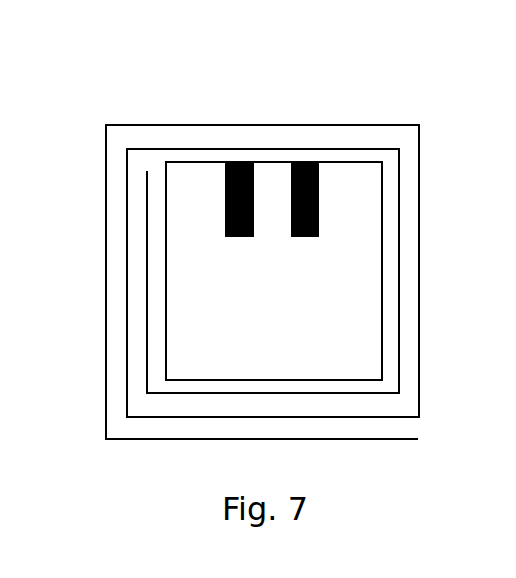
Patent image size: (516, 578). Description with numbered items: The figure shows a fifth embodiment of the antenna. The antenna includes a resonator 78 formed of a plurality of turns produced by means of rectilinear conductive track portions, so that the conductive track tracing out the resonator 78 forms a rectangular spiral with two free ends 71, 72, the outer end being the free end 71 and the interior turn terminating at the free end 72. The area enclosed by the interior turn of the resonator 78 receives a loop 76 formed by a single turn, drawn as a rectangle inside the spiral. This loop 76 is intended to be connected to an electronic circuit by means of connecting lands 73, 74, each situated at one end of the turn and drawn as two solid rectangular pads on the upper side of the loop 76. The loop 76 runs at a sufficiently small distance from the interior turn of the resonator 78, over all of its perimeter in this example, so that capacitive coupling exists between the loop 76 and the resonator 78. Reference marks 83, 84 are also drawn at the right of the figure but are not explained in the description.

The free end 71 is at (418, 439).
The free end 72 is at (147, 172).
The connecting land 73 is at (240, 237).
The connecting land 74 is at (305, 237).
The loop 76 is at (382, 360).
The resonator 78 is at (403, 125).
The connection line 83 is at (515, 314).
The connection line 84 is at (515, 268).